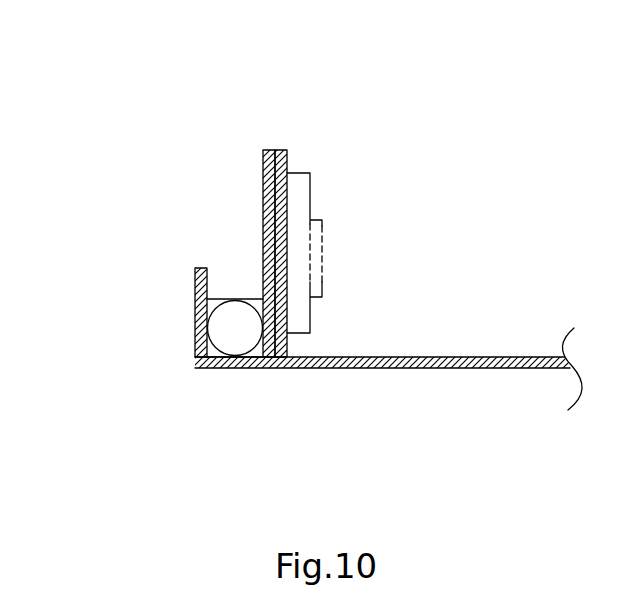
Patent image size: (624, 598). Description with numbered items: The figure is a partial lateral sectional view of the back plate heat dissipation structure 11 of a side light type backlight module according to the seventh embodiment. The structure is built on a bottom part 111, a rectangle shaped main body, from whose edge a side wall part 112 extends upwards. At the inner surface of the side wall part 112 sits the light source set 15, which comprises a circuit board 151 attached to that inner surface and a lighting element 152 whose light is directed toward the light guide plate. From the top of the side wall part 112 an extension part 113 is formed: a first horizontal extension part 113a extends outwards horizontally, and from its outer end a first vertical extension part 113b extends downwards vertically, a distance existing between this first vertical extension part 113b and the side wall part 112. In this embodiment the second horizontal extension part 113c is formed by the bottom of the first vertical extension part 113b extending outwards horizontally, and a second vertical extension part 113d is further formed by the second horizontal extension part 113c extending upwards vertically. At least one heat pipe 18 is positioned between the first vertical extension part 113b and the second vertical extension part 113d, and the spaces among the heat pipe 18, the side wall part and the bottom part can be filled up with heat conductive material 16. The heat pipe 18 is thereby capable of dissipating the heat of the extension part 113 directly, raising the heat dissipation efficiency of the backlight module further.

The back plate heat dissipation structure 11 is at (311, 259).
The bottom part 111 is at (507, 368).
The side wall part 112 is at (287, 342).
The extension part 113 is at (163, 259).
The first horizontal extension part 113a is at (278, 150).
The first vertical extension part 113b is at (263, 175).
The second horizontal extension part 113c is at (235, 368).
The second vertical extension part 113d is at (195, 287).
The light source set 15 is at (381, 181).
The circuit board 151 is at (300, 174).
The lighting element 152 is at (322, 250).
The heat conductive material 16 is at (195, 299).
The heat pipe 18 is at (232, 333).